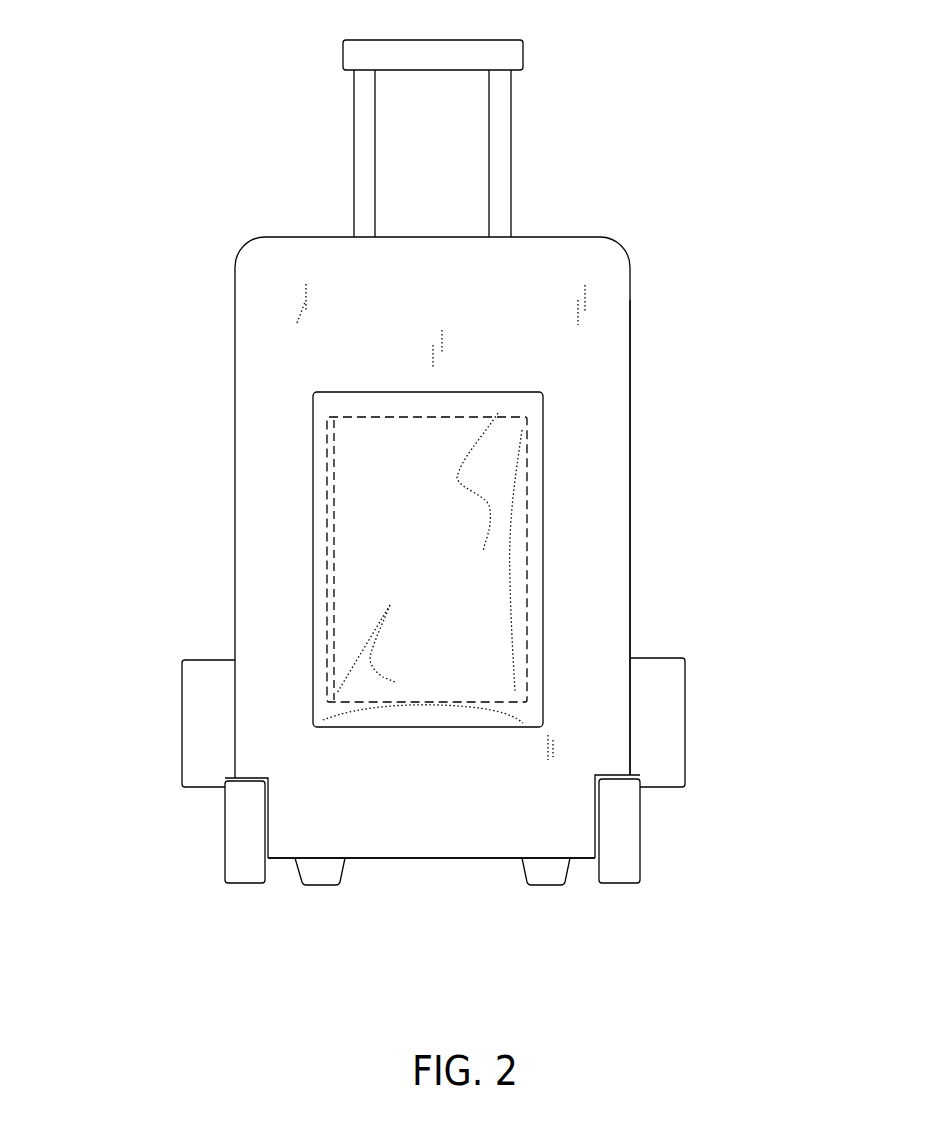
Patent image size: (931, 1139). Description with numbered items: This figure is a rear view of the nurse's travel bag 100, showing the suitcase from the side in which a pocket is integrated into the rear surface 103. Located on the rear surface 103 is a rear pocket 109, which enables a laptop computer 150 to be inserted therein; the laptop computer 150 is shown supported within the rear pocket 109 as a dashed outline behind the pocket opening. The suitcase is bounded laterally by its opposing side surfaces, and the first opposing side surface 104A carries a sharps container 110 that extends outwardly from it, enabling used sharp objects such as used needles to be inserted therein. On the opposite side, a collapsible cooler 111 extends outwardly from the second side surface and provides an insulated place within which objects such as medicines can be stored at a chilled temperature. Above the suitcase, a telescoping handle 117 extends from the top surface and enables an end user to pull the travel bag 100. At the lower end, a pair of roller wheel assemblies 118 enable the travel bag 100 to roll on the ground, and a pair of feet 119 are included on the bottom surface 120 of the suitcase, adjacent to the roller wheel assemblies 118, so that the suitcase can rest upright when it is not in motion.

The nurse's travel bag 100 is at (437, 484).
The telescoping handle 117 is at (372, 137).
The rear surface 103 is at (250, 368).
The first opposing side surface 104A is at (630, 567).
The rear pocket 109 is at (527, 392).
The laptop computer 150 is at (527, 472).
The collapsible cooler 111 is at (197, 710).
The sharps container 110 is at (685, 720).
The roller wheel assemblies 118 is at (640, 862).
The feet 119 is at (540, 885).
The bottom surface 120 is at (428, 858).